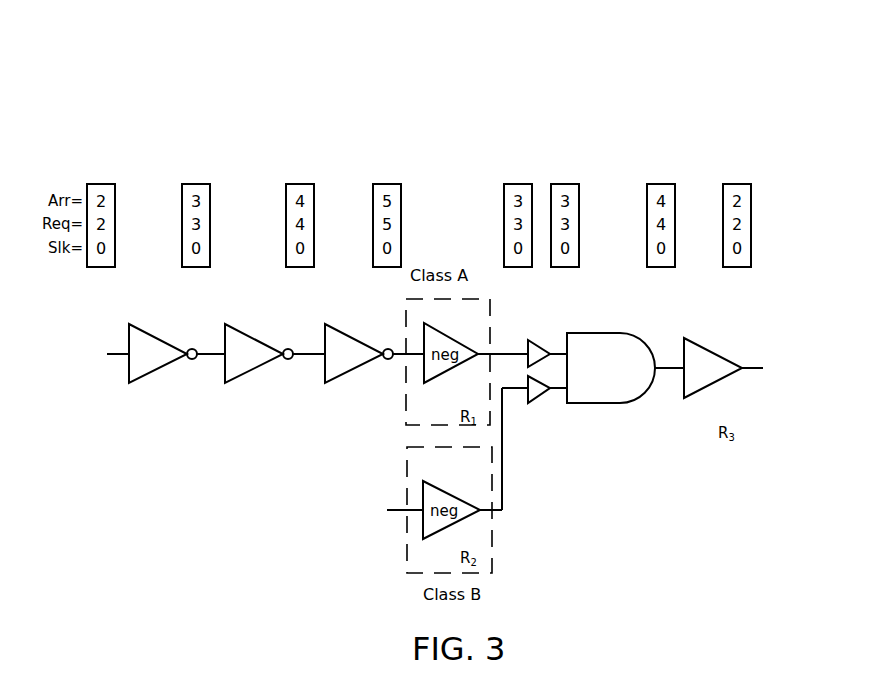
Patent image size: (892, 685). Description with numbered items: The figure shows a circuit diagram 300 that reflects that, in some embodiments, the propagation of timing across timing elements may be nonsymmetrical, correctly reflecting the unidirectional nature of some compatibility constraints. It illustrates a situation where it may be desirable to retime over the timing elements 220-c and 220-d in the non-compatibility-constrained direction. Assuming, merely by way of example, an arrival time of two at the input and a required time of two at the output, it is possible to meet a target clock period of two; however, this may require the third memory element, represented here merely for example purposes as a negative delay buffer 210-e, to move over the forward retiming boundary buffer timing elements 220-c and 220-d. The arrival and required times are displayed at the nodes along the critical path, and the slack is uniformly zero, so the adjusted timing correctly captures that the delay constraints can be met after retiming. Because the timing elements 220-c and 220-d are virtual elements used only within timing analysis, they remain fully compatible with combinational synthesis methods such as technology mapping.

The circuit diagram 300 is at (283, 62).
The timing element 220-c is at (543, 346).
The timing element 220-d is at (543, 396).
The negative delay buffer 210-e is at (726, 373).